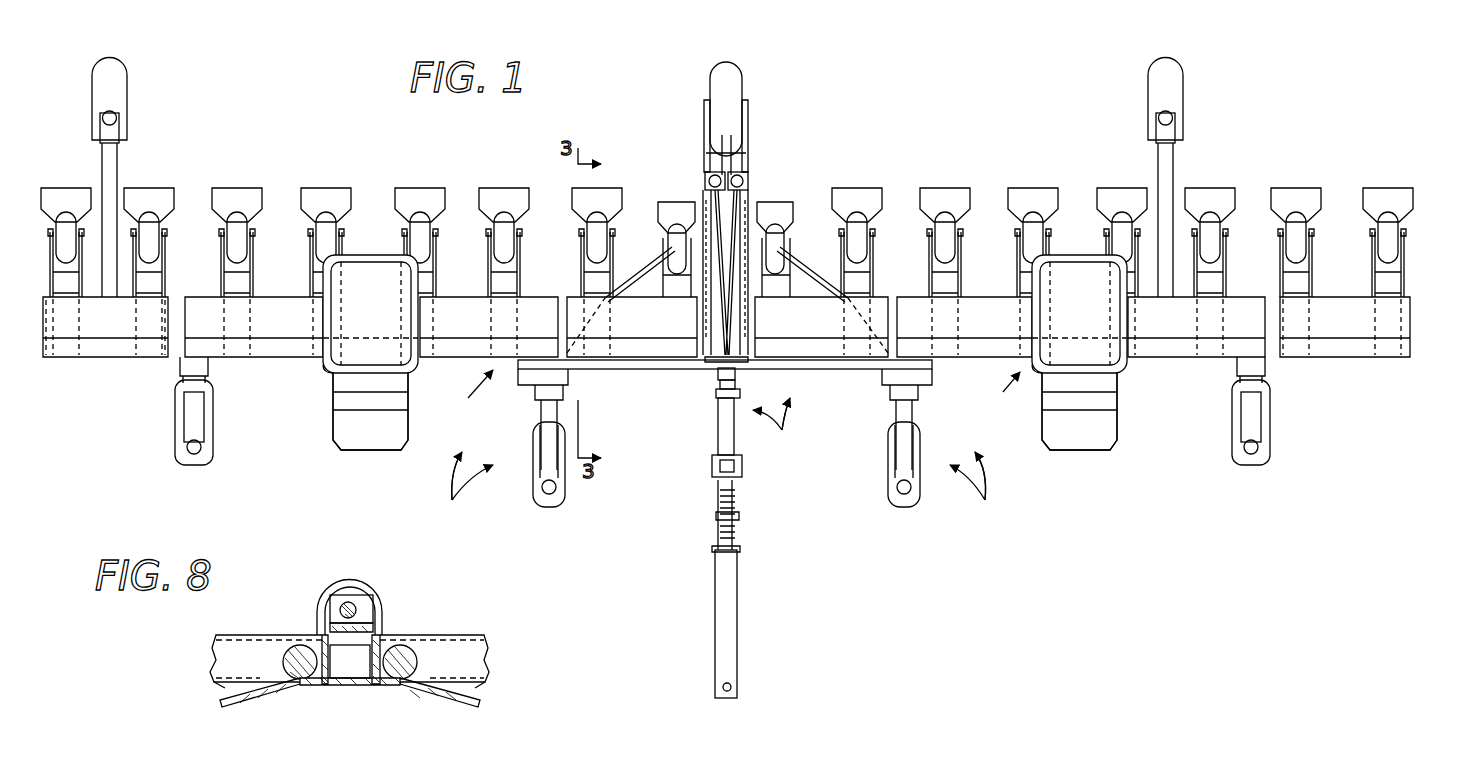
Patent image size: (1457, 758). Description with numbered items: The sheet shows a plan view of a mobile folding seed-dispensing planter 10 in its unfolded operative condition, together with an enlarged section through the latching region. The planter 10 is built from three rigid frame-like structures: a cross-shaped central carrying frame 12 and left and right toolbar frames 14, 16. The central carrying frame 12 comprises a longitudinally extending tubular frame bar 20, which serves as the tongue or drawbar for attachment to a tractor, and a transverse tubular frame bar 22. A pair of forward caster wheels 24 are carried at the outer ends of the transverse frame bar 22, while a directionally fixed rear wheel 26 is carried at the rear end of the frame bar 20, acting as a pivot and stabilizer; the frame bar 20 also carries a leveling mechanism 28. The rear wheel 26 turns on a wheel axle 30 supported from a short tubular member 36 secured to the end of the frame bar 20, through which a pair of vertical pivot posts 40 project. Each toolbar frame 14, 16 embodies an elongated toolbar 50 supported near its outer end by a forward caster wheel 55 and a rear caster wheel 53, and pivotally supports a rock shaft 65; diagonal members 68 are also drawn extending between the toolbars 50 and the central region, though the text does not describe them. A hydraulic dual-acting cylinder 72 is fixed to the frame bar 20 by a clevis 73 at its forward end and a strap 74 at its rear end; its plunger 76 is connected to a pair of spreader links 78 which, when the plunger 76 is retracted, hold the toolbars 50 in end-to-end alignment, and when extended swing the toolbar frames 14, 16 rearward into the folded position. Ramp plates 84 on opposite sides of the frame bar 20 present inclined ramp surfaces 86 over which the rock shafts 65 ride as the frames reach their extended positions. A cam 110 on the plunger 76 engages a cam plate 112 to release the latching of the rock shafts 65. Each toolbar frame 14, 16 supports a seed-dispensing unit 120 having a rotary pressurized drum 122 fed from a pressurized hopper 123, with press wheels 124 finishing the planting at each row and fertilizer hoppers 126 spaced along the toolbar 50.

In FIG. 1, the mobile folding seed-dispensing planter 10 is at (719, 486).
In FIG. 1, the central carrying frame 12 is at (781, 421).
In FIG. 1, the left toolbar frame 14 is at (466, 391).
In FIG. 1, the right toolbar frame 16 is at (1002, 389).
In FIG. 1, the longitudinally extending tubular frame bar 20 is at (727, 215).
In FIG. 1, the transverse tubular frame bar 22 is at (638, 378).
In FIG. 1, the forward caster wheels 24 is at (560, 500).
In FIG. 1, the directionally fixed rear wheel 26 is at (737, 86).
In FIG. 1, the leveling mechanism 28 is at (738, 512).
In FIG. 1, the wheel axle 30 is at (748, 103).
In FIG. 1, the tubular member 36 is at (714, 173).
In FIG. 1, the vertical pivot posts 40 is at (708, 180).
In FIG. 1, the toolbar 50 is at (162, 358).
In FIG. 8, the toolbar 50 is at (252, 645).
In FIG. 1, the rear caster wheel 53 is at (128, 95).
In FIG. 1, the forward caster wheel 55 is at (213, 447).
In FIG. 1, the rock shaft 65 is at (672, 232).
In FIG. 8, the rock shaft 65 is at (296, 650).
In FIG. 1, the diagonal brace 68 is at (650, 262).
In FIG. 1, the hydraulic dual-acting cylinder 72 is at (720, 420).
In FIG. 8, the hydraulic dual-acting cylinder 72 is at (345, 592).
In FIG. 1, the clevis 73 is at (742, 466).
In FIG. 1, the strap 74 is at (716, 394).
In FIG. 8, the strap 74 is at (355, 583).
In FIG. 1, the plunger 76 is at (737, 374).
In FIG. 1, the spreader links 78 is at (722, 310).
In FIG. 8, the ramp plates 84 is at (242, 703).
In FIG. 8, the ramp surfaces 86 is at (232, 694).
In FIG. 1, the cam 110 is at (718, 385).
In FIG. 8, the cam 110 is at (358, 600).
In FIG. 1, the cam plate 112 is at (710, 365).
In FIG. 1, the seed-dispensing unit 120 is at (725, 352).
In FIG. 1, the rotary pressurized drum 122 is at (360, 445).
In FIG. 1, the pressurized hopper 123 is at (330, 372).
In FIG. 1, the press wheels 124 is at (235, 228).
In FIG. 1, the fertilizer hoppers 126 is at (97, 360).